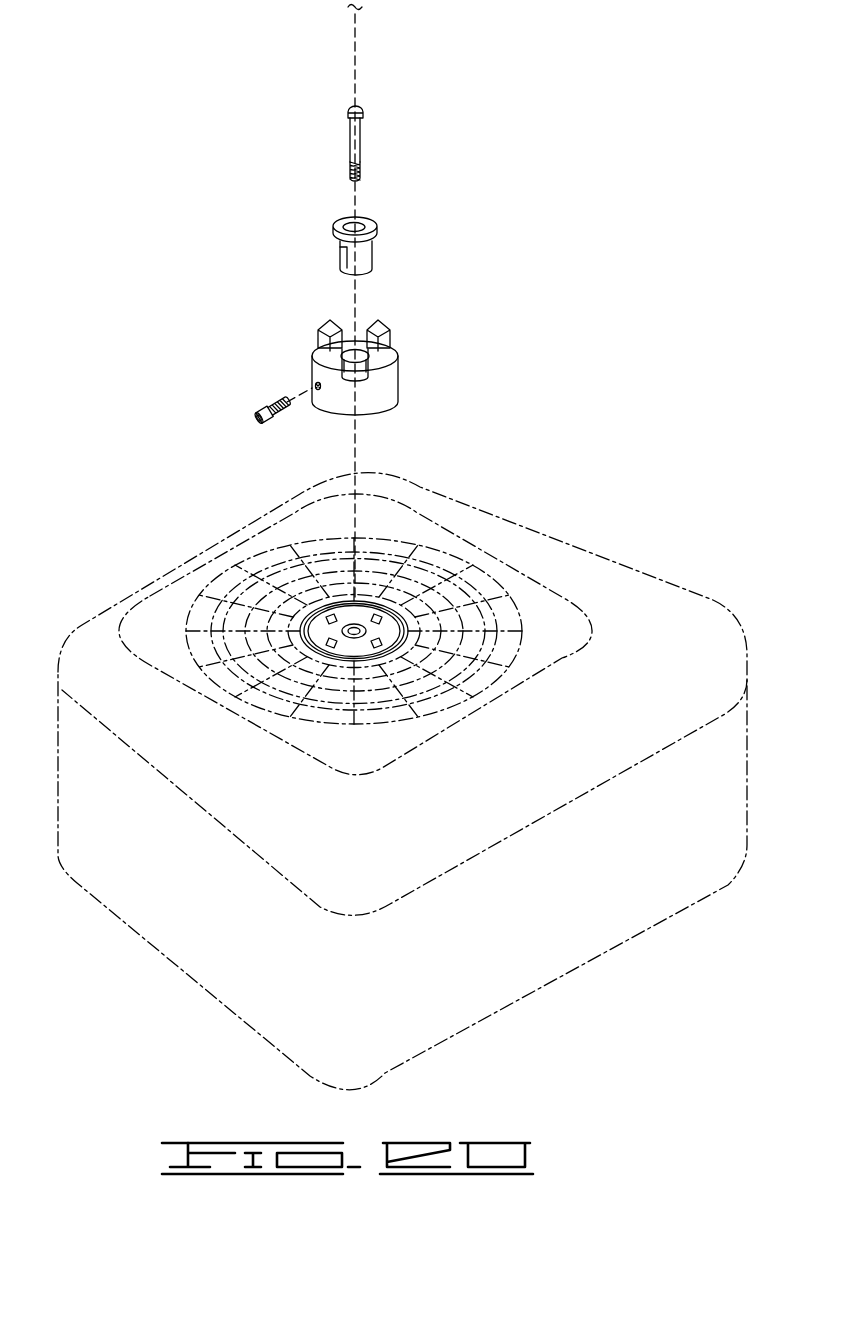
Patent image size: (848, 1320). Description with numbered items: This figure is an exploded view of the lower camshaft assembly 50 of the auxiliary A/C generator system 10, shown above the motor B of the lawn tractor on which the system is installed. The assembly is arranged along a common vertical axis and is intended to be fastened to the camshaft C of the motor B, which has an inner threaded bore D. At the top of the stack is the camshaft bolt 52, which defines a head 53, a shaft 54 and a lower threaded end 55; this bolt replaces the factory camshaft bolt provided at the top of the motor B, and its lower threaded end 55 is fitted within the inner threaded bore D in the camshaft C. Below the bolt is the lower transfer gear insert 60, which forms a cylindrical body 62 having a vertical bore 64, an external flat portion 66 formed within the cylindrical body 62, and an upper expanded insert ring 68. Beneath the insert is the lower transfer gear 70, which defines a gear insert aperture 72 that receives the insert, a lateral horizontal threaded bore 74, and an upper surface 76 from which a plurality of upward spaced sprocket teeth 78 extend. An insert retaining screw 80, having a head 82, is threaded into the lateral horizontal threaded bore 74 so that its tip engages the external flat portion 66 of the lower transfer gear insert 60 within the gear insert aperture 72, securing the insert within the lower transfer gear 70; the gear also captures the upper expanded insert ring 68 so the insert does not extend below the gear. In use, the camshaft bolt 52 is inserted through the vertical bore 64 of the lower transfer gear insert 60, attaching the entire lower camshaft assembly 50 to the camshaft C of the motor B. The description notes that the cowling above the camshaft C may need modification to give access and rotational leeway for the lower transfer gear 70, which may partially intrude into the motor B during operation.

The auxiliary A/C generator system 10 is at (138, 62).
The lower camshaft assembly 50 is at (502, 77).
The camshaft bolt 52 is at (352, 146).
The head 53 is at (352, 108).
The shaft 54 is at (362, 136).
The lower threaded end 55 is at (362, 172).
The lower transfer gear insert 60 is at (334, 236).
The cylindrical body 62 is at (371, 259).
The vertical bore 64 is at (352, 224).
The external flat portion 66 is at (341, 259).
The upper expanded insert ring 68 is at (372, 223).
The lower transfer gear 70 is at (378, 402).
The gear insert aperture 72 is at (390, 347).
The lateral horizontal threaded bore 74 is at (318, 391).
The upper surface 76 is at (378, 366).
The upward spaced sprocket teeth 78 is at (328, 327).
The insert retaining screw 80 is at (272, 402).
The head 82 is at (256, 421).
The motor B is at (583, 903).
The camshaft C is at (364, 626).
The inner threaded bore D is at (348, 624).